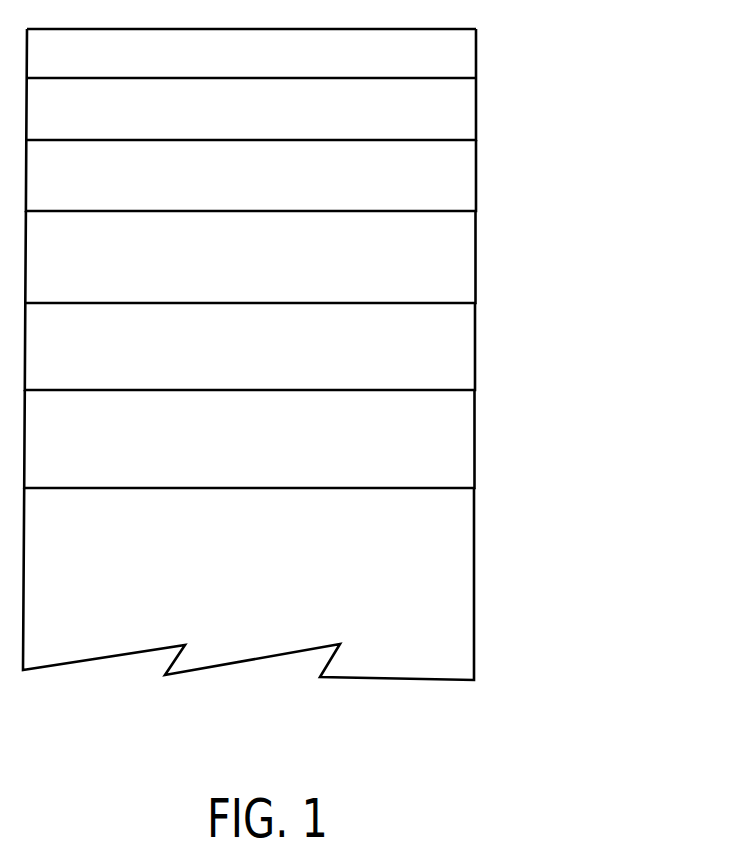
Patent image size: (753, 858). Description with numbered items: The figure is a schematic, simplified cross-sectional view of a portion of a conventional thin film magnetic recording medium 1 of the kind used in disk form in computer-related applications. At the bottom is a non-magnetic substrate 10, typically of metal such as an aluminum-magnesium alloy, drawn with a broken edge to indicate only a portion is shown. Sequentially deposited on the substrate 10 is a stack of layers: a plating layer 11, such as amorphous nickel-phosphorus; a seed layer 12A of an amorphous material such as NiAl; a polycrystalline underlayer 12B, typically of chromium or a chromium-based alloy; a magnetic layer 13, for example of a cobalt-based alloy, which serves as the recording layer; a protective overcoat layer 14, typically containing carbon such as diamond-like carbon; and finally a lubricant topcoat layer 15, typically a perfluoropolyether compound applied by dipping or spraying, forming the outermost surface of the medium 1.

The recording medium 1 is at (608, 138).
The non-magnetic substrate 10 is at (474, 584).
The plating layer 11 is at (476, 432).
The seed layer 12A is at (476, 347).
The polycrystalline underlayer 12B is at (476, 266).
The magnetic layer 13 is at (476, 181).
The protective overcoat layer 14 is at (476, 117).
The lubricant topcoat layer 15 is at (476, 60).